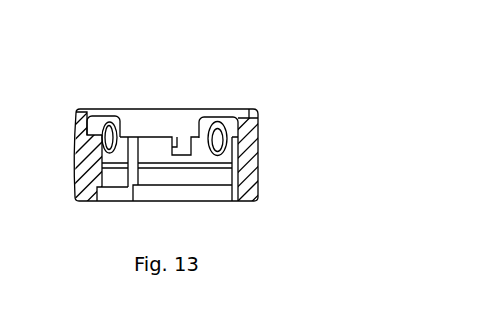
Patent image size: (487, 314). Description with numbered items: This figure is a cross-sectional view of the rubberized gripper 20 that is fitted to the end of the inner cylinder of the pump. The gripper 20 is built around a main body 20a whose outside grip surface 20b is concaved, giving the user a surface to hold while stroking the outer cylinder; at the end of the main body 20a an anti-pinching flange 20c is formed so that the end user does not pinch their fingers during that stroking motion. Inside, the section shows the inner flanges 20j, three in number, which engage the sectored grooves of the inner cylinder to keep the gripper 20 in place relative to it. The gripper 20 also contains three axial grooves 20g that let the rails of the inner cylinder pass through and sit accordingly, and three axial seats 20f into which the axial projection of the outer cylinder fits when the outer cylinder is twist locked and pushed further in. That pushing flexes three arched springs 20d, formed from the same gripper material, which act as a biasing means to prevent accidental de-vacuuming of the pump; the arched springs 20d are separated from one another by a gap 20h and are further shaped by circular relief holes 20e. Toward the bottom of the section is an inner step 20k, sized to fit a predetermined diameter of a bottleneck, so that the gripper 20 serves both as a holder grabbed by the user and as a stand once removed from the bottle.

The gripper 20 is at (343, 90).
The main body 20a is at (255, 147).
The outside grip surface 20b is at (255, 182).
The anti-pinching flange 20c is at (255, 117).
The arched springs 20d is at (225, 125).
The circular relief holes 20e is at (212, 126).
The axial seats 20f is at (177, 137).
The axial grooves 20g is at (127, 115).
The gap 20h is at (88, 110).
The inner flanges 20j is at (212, 163).
The inner step 20k is at (110, 192).